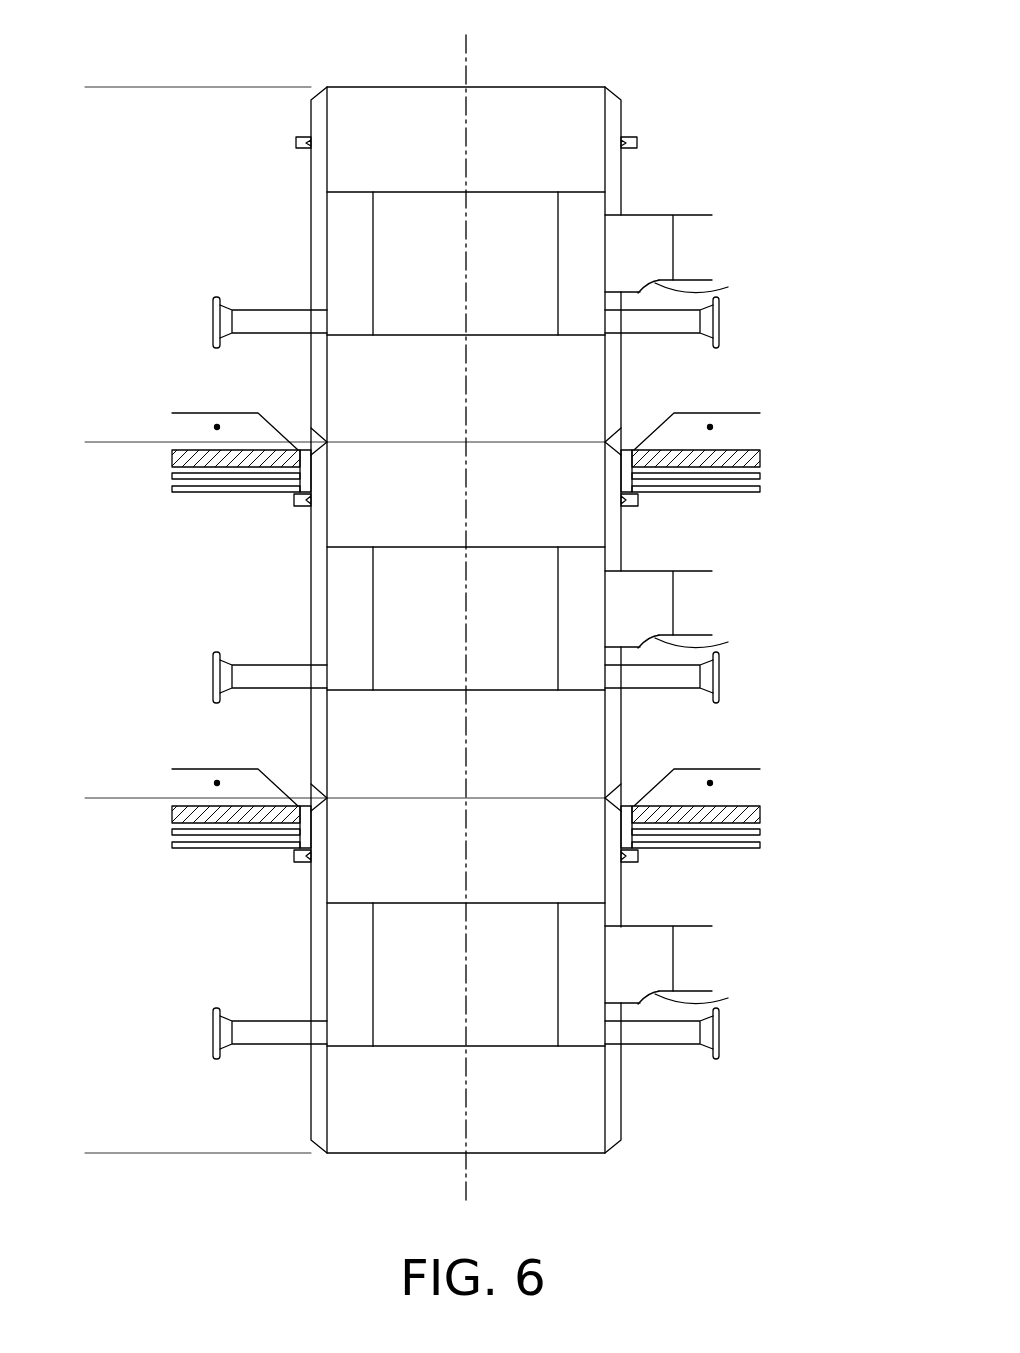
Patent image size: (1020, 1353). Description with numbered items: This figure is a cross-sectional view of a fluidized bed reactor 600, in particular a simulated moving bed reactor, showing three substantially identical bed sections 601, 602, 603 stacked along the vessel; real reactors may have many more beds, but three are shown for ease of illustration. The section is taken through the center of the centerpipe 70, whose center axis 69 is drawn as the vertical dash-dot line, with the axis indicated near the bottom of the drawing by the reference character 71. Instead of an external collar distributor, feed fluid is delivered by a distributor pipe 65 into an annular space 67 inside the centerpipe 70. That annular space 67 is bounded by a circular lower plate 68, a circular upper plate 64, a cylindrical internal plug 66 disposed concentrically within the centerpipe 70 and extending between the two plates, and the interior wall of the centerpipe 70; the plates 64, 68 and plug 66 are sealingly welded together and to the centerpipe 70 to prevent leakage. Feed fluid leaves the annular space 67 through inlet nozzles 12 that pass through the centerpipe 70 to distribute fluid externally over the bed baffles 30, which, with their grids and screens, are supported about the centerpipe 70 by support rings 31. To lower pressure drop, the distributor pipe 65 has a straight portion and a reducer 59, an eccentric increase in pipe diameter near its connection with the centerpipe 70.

The fluidized bed reactor 600 is at (722, 46).
The circular upper plate 64 is at (413, 188).
The circular lower plate 68 is at (383, 337).
The center axis 69 is at (468, 188).
The cylindrical internal plug 66 is at (561, 303).
The centerpipe 70 is at (309, 189).
The annular space 67 is at (333, 251).
The distributor pipe 65 is at (688, 212).
The reducer 59 is at (712, 287).
The inlet nozzle 12 is at (296, 140).
The support ring 31 is at (637, 140).
The bed baffle 30 is at (758, 450).
The centerline 71 is at (467, 1190).
The bed section 603 is at (123, 89).
The bed section 602 is at (123, 444).
The bed section 601 is at (123, 800).